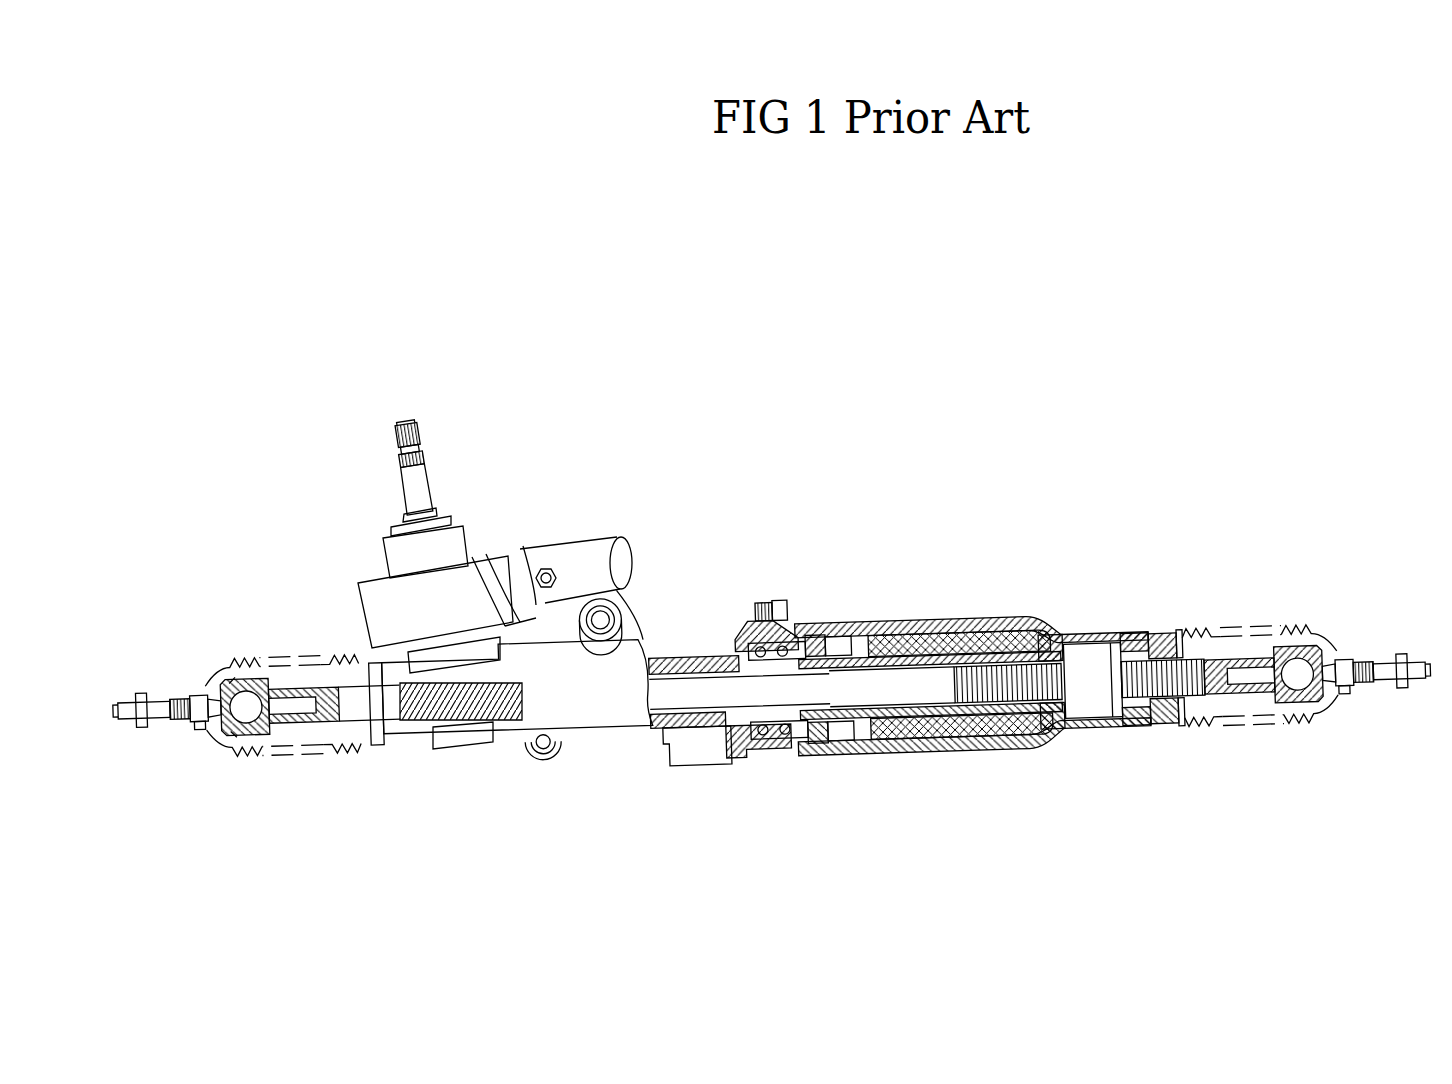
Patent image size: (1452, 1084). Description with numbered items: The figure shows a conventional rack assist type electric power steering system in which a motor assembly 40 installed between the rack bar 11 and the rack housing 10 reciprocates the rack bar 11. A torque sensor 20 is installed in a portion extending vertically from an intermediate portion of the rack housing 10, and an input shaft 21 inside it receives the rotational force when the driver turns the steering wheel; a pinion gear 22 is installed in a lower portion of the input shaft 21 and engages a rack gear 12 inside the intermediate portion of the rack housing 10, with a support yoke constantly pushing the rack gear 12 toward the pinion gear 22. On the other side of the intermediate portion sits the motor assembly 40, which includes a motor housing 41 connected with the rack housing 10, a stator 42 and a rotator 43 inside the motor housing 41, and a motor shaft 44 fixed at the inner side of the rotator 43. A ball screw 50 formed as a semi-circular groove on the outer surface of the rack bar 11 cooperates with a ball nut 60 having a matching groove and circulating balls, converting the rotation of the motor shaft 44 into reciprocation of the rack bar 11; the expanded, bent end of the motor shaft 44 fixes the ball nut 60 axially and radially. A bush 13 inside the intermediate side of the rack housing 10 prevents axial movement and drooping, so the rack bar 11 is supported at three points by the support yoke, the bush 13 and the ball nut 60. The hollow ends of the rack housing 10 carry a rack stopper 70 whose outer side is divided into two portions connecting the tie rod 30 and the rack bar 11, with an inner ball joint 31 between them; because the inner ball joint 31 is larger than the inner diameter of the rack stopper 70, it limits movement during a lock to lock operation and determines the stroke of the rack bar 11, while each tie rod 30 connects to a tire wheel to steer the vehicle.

The rack housing 10 is at (605, 740).
The rack bar 11 is at (693, 745).
The rack gear 12 is at (540, 745).
The bush 13 is at (693, 655).
The torque sensor 20 is at (373, 597).
The input shaft 21 is at (417, 478).
The pinion gear 22 is at (405, 725).
The tie rod 30 is at (162, 716).
The inner ball joint 31 is at (230, 750).
The motor assembly 40 is at (999, 594).
The motor housing 41 is at (1025, 618).
The stator 42 is at (930, 620).
The rotator 43 is at (860, 632).
The motor shaft 44 is at (1048, 752).
The ball screw 50 is at (975, 755).
The ball nut 60 is at (1103, 625).
The rack stopper 70 is at (1195, 742).